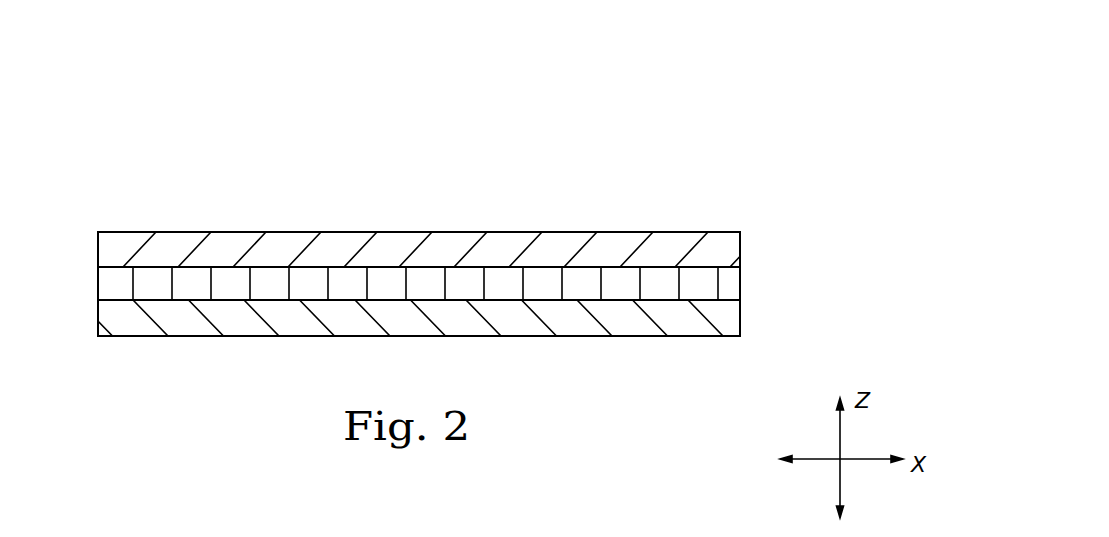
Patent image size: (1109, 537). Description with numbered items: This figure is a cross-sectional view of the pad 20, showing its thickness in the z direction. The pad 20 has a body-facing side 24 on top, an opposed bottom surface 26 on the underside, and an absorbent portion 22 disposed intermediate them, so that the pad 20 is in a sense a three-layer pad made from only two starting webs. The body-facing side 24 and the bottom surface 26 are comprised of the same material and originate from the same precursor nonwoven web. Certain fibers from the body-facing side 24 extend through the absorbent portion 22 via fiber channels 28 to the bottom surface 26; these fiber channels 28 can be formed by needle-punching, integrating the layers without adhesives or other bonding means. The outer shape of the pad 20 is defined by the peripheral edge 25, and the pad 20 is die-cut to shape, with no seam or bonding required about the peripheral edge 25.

The pad 20 is at (623, 152).
The absorbent portion 22 is at (217, 287).
The body-facing side 24 is at (160, 230).
The peripheral edge 25 is at (100, 285).
The bottom surface 26 is at (150, 340).
The fiber channels 28 is at (407, 287).